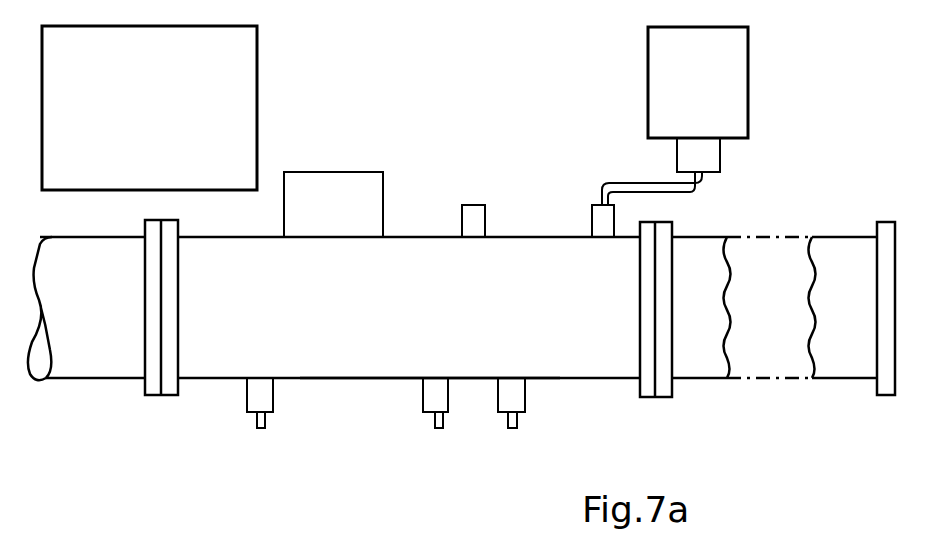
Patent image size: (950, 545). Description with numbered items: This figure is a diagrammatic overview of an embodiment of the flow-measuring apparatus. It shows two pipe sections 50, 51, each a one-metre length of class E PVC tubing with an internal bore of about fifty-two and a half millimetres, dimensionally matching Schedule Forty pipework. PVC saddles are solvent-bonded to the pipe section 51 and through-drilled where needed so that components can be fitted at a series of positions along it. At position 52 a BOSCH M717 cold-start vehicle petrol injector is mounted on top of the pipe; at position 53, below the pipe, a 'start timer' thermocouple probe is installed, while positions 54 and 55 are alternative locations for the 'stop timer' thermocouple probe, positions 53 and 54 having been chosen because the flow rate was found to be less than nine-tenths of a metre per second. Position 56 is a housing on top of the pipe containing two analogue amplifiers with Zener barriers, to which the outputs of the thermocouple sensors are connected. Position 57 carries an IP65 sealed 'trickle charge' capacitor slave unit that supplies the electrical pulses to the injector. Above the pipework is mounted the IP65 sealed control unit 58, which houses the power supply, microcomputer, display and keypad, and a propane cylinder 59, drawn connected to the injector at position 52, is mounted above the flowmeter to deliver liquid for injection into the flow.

The pipe section 50 is at (700, 379).
The pipe section 51 is at (585, 380).
The cold-start vehicle petrol injector position 52 is at (590, 214).
The start timer thermocouple probe position 53 is at (505, 419).
The stop timer thermocouple probe position 54 is at (431, 418).
The stop timer thermocouple probe position 55 is at (255, 417).
The analogue amplifier housing 56 is at (330, 170).
The trickle charge capacitor slave unit 57 is at (470, 203).
The control unit 58 is at (258, 62).
The propane cylinder 59 is at (648, 68).